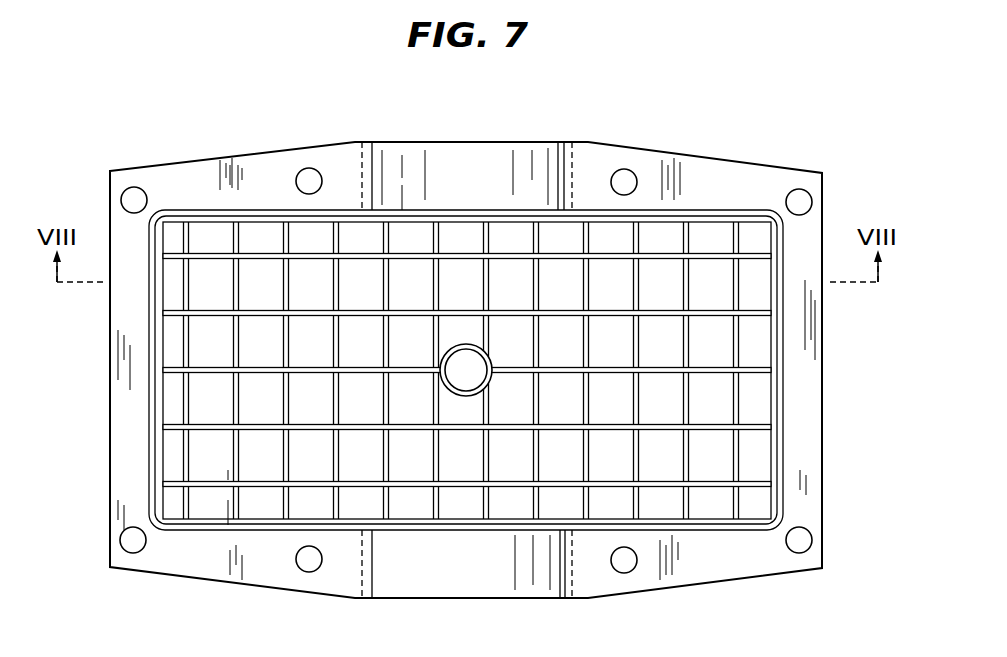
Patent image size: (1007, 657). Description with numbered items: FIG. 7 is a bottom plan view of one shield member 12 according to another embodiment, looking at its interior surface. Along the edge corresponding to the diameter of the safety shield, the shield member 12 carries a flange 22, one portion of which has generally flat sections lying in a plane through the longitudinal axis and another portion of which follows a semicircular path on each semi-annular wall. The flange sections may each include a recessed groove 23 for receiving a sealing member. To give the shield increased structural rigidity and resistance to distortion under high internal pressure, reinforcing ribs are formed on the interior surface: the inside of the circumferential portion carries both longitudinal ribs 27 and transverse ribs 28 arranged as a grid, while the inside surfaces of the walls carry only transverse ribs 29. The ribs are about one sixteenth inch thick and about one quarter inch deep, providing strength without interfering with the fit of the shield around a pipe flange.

The shield member 12 is at (636, 128).
The flange 22 is at (808, 495).
The recessed groove 23 is at (703, 527).
The longitudinal ribs 27 is at (568, 373).
The transverse ribs 28 is at (584, 357).
The transverse ribs 29 is at (467, 398).